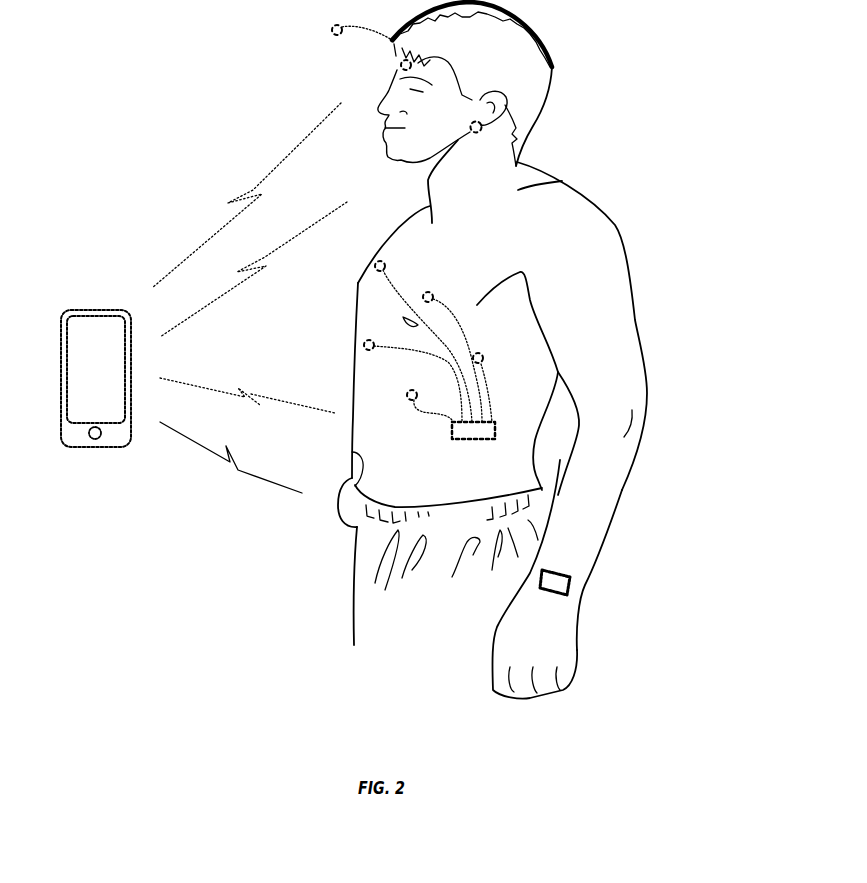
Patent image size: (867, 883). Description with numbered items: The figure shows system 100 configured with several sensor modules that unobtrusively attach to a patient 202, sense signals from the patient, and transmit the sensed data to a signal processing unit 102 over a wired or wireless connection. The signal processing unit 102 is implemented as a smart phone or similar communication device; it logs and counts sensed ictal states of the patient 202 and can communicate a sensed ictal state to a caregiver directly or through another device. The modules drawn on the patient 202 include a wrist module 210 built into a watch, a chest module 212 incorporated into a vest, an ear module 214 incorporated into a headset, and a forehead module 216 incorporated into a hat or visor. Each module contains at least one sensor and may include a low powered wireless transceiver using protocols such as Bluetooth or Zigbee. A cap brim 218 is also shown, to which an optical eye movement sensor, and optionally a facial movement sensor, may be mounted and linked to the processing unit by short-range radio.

The system 100 is at (97, 61).
The signal processing unit 102 is at (84, 322).
The patient 202 is at (593, 243).
The wrist module 210 is at (577, 582).
The chest module 212 is at (450, 436).
The ear module 214 is at (483, 130).
The forehead module 216 is at (399, 64).
The cap brim 218 is at (331, 32).